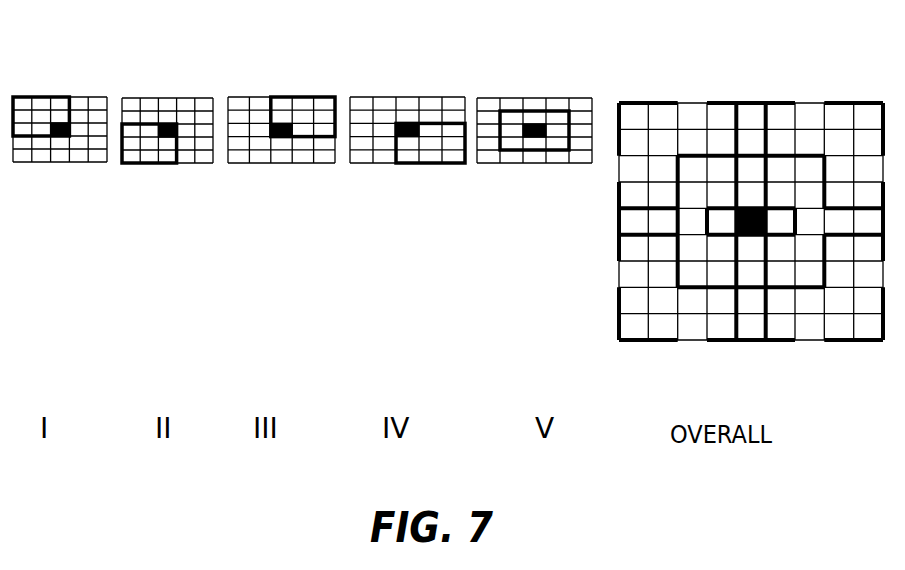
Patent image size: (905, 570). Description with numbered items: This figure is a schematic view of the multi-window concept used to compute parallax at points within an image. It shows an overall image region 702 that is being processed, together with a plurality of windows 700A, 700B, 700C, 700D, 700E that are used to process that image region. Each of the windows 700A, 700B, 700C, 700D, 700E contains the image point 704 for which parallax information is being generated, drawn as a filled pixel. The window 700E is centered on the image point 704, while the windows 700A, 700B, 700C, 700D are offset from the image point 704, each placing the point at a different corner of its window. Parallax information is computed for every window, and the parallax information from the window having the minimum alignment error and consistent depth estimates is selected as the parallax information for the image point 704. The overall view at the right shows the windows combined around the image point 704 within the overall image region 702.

The window 700A is at (42, 96).
The window 700B is at (145, 165).
The window 700C is at (303, 97).
The window 700D is at (447, 165).
The window 700E is at (530, 113).
The overall image region 702 is at (630, 268).
The image point 704 is at (58, 142).